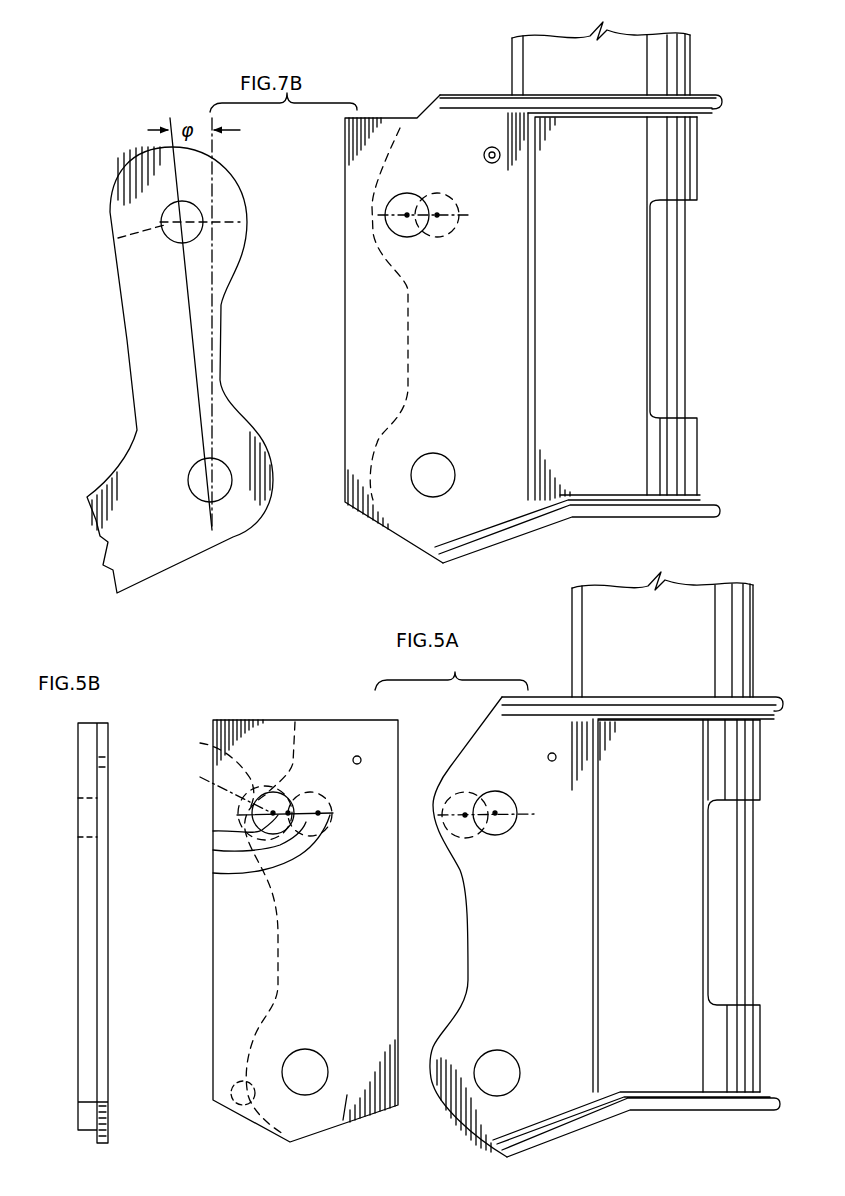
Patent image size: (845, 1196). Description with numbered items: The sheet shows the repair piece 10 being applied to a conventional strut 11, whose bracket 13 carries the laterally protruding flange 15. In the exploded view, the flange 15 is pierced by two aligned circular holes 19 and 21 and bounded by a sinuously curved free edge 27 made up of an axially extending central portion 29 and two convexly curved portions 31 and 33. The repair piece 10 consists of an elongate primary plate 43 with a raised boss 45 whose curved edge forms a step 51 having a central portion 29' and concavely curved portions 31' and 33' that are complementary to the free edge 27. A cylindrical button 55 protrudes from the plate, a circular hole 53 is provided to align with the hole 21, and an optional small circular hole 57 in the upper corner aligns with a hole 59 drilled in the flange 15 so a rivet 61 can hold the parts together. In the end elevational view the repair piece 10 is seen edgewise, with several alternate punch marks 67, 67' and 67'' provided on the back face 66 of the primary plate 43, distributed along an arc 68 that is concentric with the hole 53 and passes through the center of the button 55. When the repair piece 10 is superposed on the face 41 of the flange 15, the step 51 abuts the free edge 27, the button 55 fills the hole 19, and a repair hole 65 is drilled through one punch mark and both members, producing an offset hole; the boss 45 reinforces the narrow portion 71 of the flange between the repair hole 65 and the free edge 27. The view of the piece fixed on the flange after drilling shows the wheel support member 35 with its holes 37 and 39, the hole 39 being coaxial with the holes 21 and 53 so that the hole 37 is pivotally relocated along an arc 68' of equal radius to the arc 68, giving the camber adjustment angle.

In FIG. 5B, the repair piece 10 is at (121, 926).
In FIG. 5A, the strut 11 is at (760, 601).
In FIG. 7B, the bracket 13 is at (675, 162).
In FIG. 5A, the bracket 13 is at (750, 768).
In FIG. 5A, the flange 15 is at (430, 1043).
In FIG. 5A, the circular hole 19 is at (510, 800).
In FIG. 5A, the circular hole 21 is at (482, 1090).
In FIG. 5A, the free edge 27 is at (492, 715).
In FIG. 7B, the central portion 29 is at (355, 314).
In FIG. 5A, the central portion 29 is at (439, 914).
In FIG. 5B, the central portion 29' is at (226, 928).
In FIG. 7B, the curved portion 31 is at (377, 329).
In FIG. 5A, the curved portion 31 is at (448, 741).
In FIG. 5B, the curved portion 31' is at (220, 770).
In FIG. 7B, the curved portion 33 is at (337, 418).
In FIG. 5A, the curved portion 33 is at (427, 1138).
In FIG. 5B, the curved portion 33' is at (219, 1106).
In FIG. 7B, the wheel support member 35 is at (236, 547).
In FIG. 7B, the circular hole 37 is at (165, 217).
In FIG. 7B, the circular hole 39 is at (188, 478).
In FIG. 5A, the face 41 is at (565, 1082).
In FIG. 5B, the primary plate 43 is at (383, 1117).
In FIG. 5B, the raised boss 45 is at (88, 958).
In FIG. 7B, the step 51 is at (410, 143).
In FIG. 5B, the step 51 is at (276, 753).
In FIG. 7B, the circular hole 53 is at (452, 470).
In FIG. 5B, the circular hole 53 is at (288, 1086).
In FIG. 7B, the cylindrical button 55 is at (458, 213).
In FIG. 5B, the cylindrical button 55 is at (83, 815).
In FIG. 5B, the small circular hole 57 is at (362, 760).
In FIG. 5A, the hole 59 is at (552, 752).
In FIG. 7B, the rivet 61 is at (500, 156).
In FIG. 7B, the repair hole 65 is at (417, 236).
In FIG. 5A, the repair hole 65 is at (438, 794).
In FIG. 5B, the repair hole 65 is at (240, 803).
In FIG. 5B, the back face 66 is at (343, 1120).
In FIG. 5B, the punch mark 67 is at (228, 828).
In FIG. 5B, the punch mark 67' is at (240, 842).
In FIG. 5B, the punch mark 67'' is at (250, 850).
In FIG. 7B, the arc 68 is at (423, 201).
In FIG. 5B, the arc 68 is at (298, 836).
In FIG. 7B, the arc 68' is at (143, 253).
In FIG. 5A, the arc 68' is at (507, 838).
In FIG. 7B, the narrow portion 71 is at (385, 235).
In FIG. 5A, the narrow portion 71 is at (440, 823).